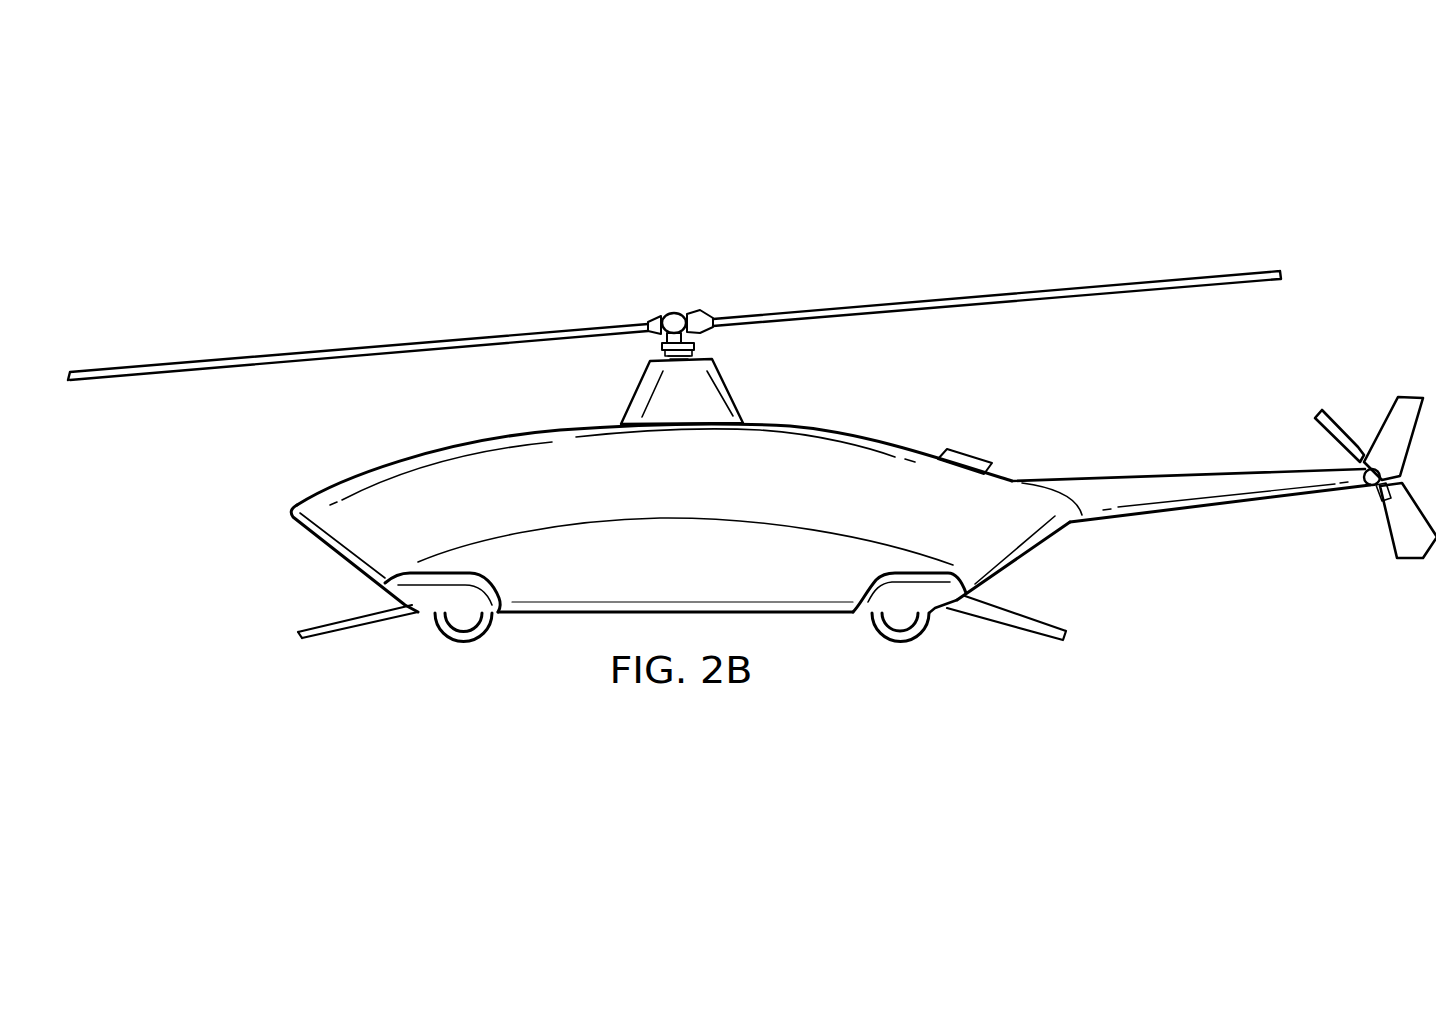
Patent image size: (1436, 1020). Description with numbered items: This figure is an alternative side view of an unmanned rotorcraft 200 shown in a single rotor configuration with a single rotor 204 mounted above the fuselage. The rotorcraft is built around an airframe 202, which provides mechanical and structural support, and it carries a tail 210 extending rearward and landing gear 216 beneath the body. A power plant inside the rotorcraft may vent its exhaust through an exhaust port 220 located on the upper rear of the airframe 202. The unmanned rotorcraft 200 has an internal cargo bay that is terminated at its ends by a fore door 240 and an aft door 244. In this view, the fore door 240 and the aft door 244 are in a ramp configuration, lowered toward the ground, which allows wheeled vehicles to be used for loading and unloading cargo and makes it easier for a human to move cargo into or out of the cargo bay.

The unmanned rotorcraft 200 is at (498, 226).
The airframe 202 is at (408, 461).
The rotor 204 is at (670, 312).
The tail 210 is at (1248, 503).
The landing gear 216 is at (465, 645).
The exhaust port 220 is at (960, 456).
The fore door 240 is at (312, 643).
The aft door 244 is at (1023, 633).